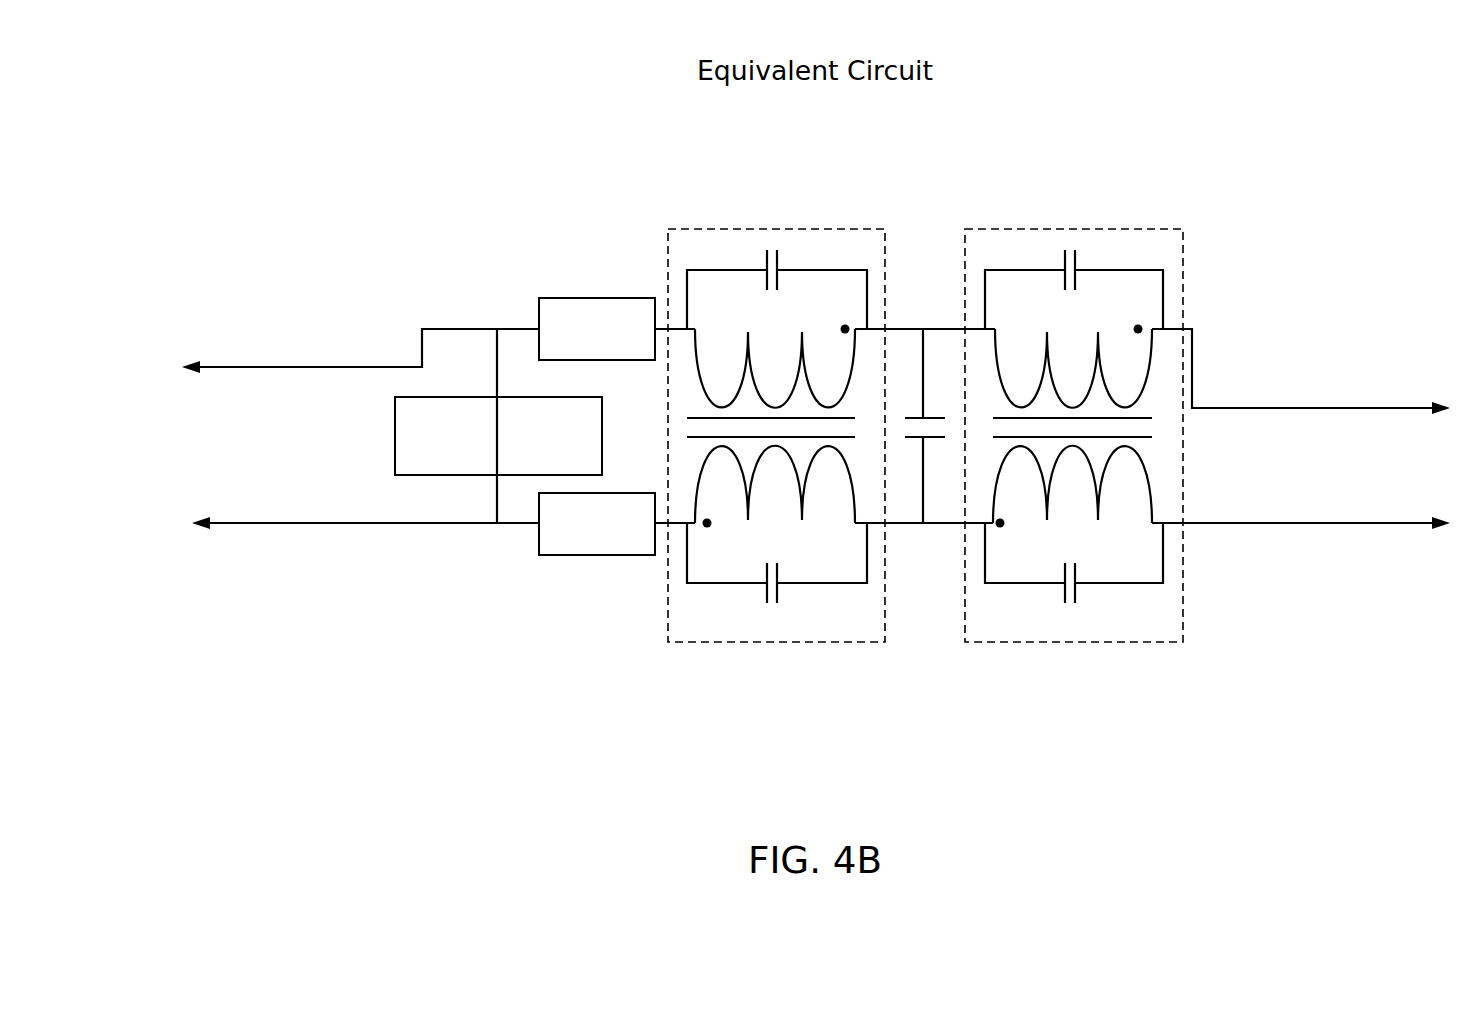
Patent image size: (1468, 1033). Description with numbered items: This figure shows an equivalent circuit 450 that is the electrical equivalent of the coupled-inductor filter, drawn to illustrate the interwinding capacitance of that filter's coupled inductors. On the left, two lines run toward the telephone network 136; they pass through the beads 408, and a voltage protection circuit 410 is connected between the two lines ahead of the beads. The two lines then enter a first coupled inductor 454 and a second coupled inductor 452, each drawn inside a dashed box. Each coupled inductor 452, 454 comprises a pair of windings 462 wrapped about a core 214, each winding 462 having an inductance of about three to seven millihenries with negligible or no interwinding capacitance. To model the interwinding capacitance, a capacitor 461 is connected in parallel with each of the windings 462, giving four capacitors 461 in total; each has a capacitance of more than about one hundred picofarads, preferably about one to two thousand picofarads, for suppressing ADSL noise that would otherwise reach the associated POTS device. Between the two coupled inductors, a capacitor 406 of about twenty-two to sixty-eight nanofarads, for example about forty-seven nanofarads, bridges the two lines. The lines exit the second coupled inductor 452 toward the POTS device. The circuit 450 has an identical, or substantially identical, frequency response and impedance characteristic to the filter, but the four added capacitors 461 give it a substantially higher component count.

The equivalent circuit 450 is at (447, 138).
The coupled inductor 454 is at (777, 229).
The coupled inductor 452 is at (1075, 229).
The capacitor 461 is at (765, 262).
The winding 462 is at (722, 406).
The core 214 is at (852, 447).
The capacitor 406 is at (916, 415).
The beads 408 is at (597, 493).
The voltage protection circuit 410 is at (450, 475).
The telephone network 136 is at (253, 461).